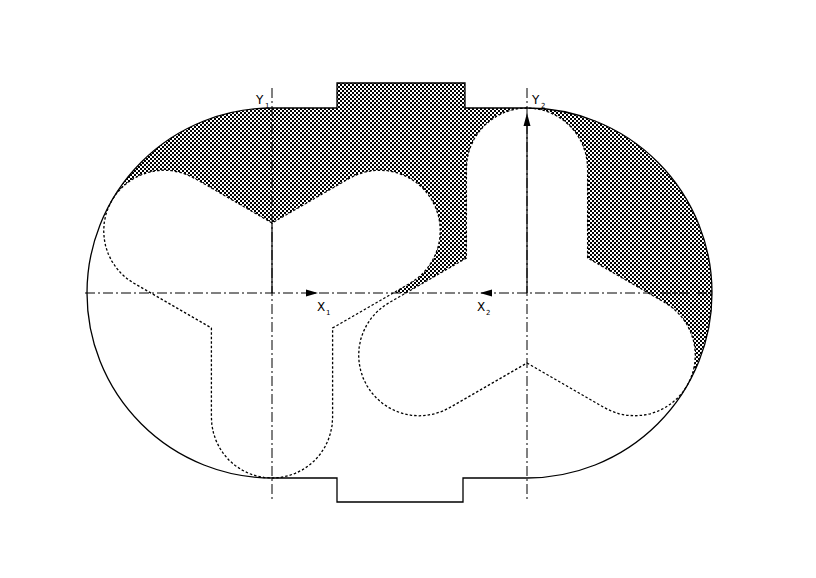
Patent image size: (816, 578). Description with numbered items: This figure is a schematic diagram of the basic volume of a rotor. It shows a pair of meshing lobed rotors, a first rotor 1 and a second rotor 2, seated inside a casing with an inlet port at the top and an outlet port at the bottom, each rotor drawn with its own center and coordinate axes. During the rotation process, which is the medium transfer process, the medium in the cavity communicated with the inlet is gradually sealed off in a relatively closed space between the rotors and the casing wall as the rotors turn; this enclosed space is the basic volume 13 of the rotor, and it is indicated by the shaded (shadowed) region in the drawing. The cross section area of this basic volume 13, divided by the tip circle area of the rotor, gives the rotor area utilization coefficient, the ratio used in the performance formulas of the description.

The first rotor (center O1) 1 is at (272, 324).
The second rotor (center O2) 2 is at (500, 308).
The pump housing / casing 13 is at (399, 324).